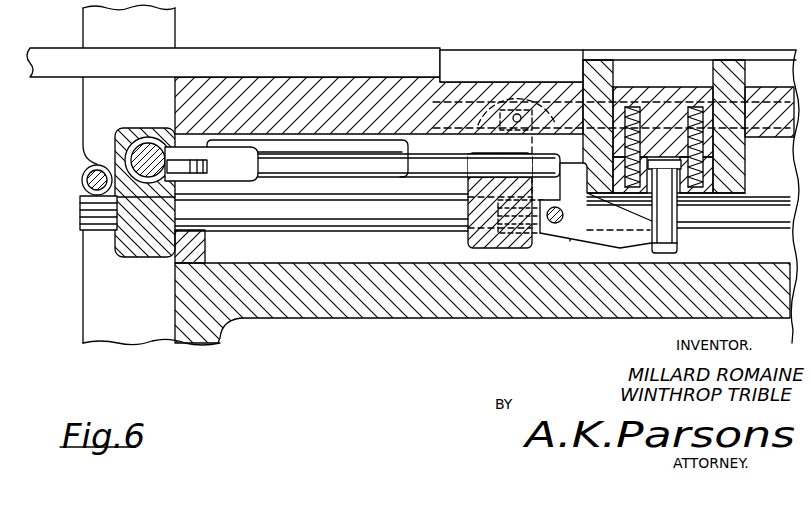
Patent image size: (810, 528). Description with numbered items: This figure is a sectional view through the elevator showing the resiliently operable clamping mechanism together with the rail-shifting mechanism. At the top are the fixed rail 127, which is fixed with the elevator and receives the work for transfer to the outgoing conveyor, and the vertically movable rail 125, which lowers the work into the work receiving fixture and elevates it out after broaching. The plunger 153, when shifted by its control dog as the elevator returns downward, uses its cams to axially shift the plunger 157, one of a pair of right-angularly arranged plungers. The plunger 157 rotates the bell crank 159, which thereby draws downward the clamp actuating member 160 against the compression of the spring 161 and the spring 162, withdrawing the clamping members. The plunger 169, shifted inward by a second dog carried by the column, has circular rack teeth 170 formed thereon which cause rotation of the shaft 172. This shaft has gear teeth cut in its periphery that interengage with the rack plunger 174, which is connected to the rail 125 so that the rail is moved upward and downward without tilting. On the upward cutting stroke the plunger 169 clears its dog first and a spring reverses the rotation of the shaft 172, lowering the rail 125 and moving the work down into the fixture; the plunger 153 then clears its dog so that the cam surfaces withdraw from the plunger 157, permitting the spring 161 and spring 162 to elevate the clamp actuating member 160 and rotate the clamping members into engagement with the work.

The vertically movable rail 125 is at (519, 62).
The fixed rail 127 is at (290, 60).
The plunger 153 is at (148, 157).
The plunger 157 is at (254, 177).
The bell crank 159 is at (613, 240).
The clamp actuating member 160 is at (663, 212).
The spring 161 is at (636, 104).
The spring 162 is at (697, 104).
The plunger 169 is at (83, 172).
The circular rack teeth 170 is at (83, 193).
The shaft 172 is at (280, 212).
The rack plunger 174 is at (505, 147).